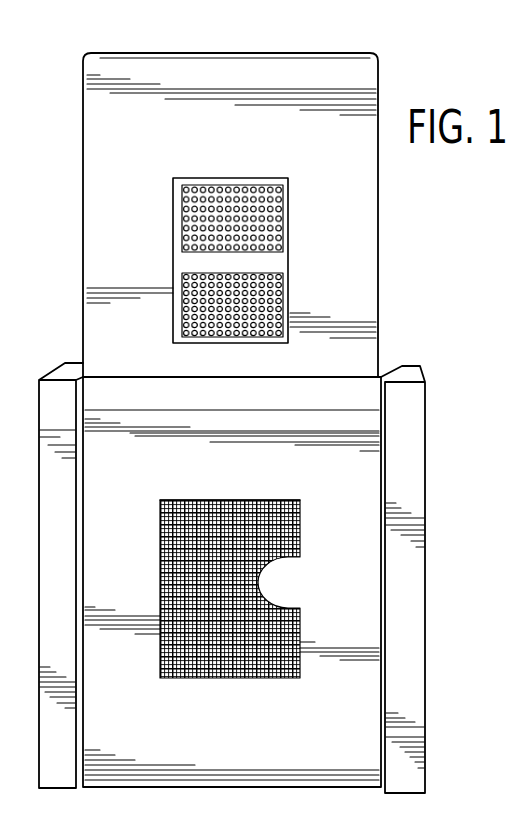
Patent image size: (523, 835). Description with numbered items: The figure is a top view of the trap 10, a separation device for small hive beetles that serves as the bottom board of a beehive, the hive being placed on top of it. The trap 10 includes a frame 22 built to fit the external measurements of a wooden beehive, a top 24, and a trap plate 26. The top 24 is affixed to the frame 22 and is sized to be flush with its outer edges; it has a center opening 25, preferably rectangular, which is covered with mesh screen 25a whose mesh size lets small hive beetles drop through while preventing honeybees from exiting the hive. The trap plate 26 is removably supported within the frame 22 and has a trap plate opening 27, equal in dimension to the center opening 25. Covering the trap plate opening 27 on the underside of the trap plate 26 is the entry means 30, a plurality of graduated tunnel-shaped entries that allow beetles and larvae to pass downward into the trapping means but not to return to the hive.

The trap 10 is at (255, 423).
The frame 22 is at (413, 440).
The top 24 is at (340, 740).
The center opening 25 is at (292, 573).
The mesh screen 25a is at (283, 500).
The trap plate 26 is at (378, 263).
The trap plate opening 27 is at (276, 178).
The entry means 30 is at (288, 295).